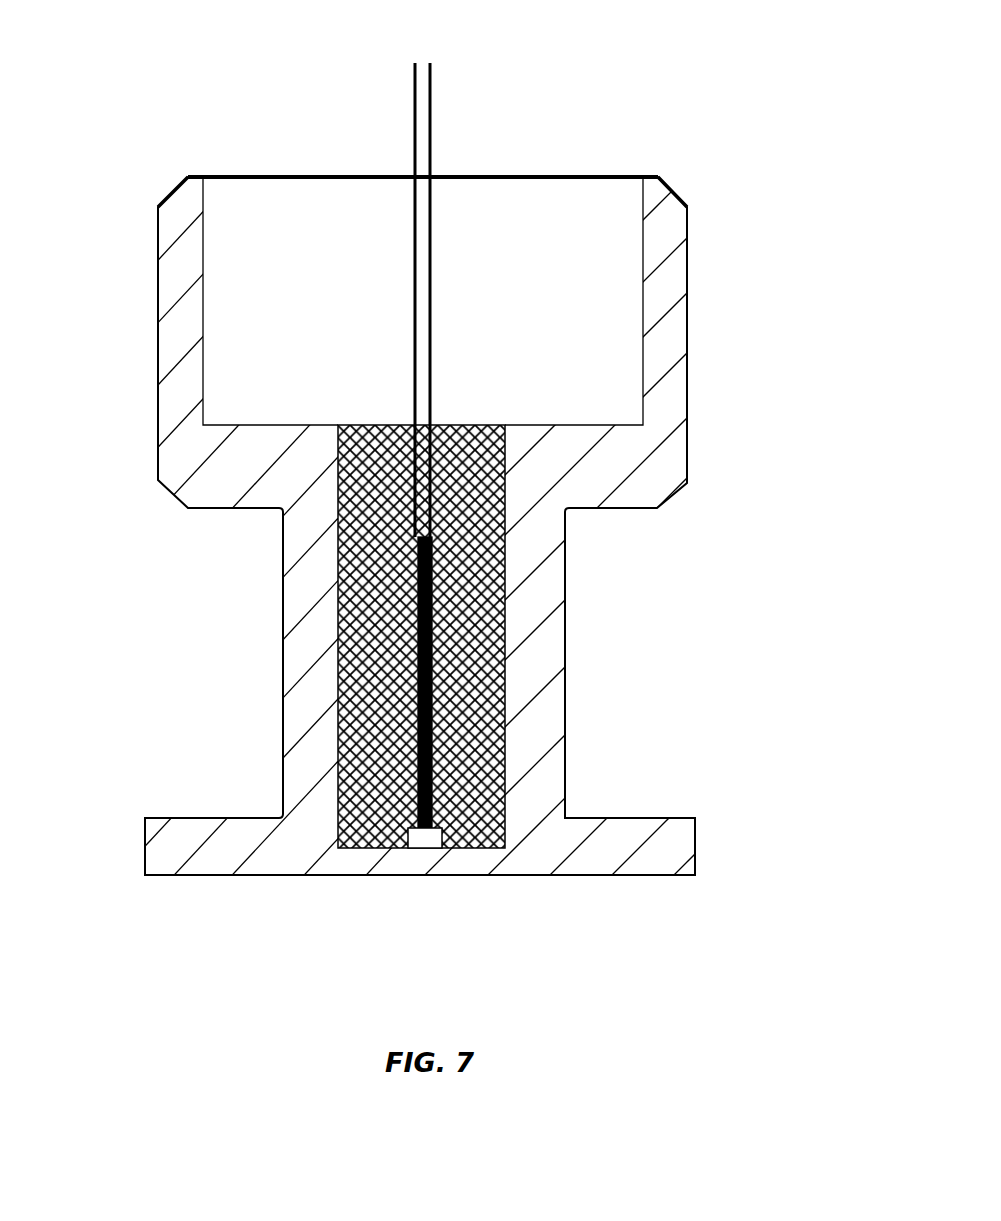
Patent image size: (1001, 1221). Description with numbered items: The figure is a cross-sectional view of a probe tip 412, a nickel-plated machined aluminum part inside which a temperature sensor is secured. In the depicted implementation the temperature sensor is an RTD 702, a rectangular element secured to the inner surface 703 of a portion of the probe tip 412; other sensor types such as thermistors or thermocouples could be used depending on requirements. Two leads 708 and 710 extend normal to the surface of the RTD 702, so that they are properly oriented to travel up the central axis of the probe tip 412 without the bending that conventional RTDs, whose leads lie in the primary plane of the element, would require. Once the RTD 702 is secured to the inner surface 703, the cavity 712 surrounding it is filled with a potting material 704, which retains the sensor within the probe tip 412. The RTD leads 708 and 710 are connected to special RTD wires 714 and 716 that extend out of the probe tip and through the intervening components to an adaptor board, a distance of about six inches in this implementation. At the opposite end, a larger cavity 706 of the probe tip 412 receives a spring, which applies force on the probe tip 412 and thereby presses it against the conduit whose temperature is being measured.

The probe tip 412 is at (152, 156).
The RTD 702 is at (470, 815).
The inner surface 703 is at (337, 813).
The potting material 704 is at (484, 663).
The cavity 706 is at (490, 200).
The lead 708 is at (337, 712).
The lead 710 is at (563, 642).
The cavity 712 is at (476, 418).
The RTD wire 714 is at (414, 292).
The RTD wire 716 is at (431, 286).